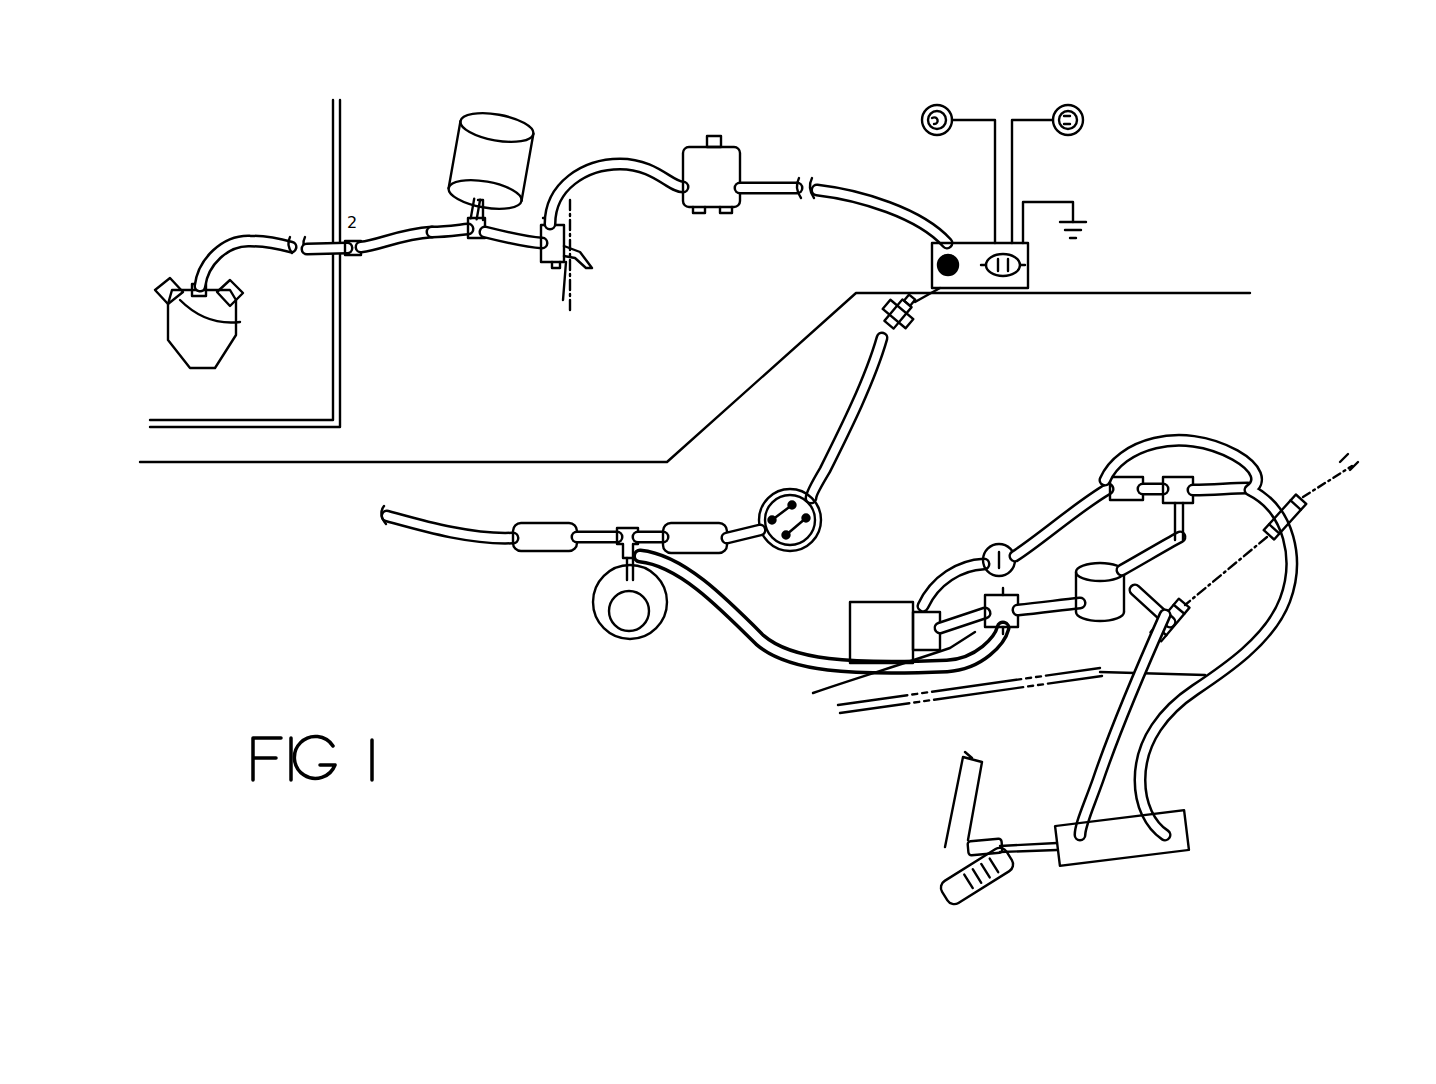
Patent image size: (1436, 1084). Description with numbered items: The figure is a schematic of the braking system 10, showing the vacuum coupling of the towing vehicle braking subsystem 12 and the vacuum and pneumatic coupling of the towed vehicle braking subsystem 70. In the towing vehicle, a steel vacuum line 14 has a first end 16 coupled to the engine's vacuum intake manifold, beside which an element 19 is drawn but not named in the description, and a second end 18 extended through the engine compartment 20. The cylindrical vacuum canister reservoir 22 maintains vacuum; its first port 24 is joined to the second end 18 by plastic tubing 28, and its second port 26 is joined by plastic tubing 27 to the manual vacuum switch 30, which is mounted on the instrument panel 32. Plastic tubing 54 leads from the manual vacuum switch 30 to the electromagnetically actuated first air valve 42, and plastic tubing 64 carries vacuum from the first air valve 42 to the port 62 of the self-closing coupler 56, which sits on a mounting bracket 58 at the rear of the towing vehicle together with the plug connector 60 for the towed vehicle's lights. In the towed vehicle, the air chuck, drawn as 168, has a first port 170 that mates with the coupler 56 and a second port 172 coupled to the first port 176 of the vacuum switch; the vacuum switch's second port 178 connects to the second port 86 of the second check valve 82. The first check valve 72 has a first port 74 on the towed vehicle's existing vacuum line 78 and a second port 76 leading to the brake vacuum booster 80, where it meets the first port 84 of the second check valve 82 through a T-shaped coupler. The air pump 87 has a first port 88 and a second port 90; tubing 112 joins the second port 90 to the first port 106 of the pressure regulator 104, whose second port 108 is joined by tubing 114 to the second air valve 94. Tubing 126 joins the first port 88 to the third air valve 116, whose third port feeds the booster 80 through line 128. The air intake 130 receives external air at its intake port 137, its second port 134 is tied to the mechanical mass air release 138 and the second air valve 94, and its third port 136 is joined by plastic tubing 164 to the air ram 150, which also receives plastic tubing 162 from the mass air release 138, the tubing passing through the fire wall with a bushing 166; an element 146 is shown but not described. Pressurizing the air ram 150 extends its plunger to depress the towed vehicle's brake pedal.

The braking system 10 is at (133, 182).
The towing vehicle braking subsystem 12 is at (176, 156).
The vacuum line 14 is at (256, 244).
The first end 16 is at (198, 282).
The second end 18 is at (365, 258).
The handpiece 19 is at (240, 322).
The engine compartment 20 is at (340, 350).
The vacuum canister reservoir 22 is at (480, 122).
The first port 24 is at (442, 260).
The second port 26 is at (490, 250).
The plastic tubing 27 is at (518, 240).
The plastic tubing 28 is at (400, 260).
The manual vacuum switch 30 is at (588, 268).
The instrument panel 32 is at (578, 230).
The first air valve 42 is at (745, 150).
The plastic tubing 54 is at (612, 158).
The coupler 56 is at (930, 262).
The mounting bracket 58 is at (1030, 252).
The plug connector 60 is at (1028, 275).
The port 62 is at (950, 243).
The plastic tubing 64 is at (858, 185).
The towed vehicle braking subsystem 70 is at (288, 543).
The first check valve 72 is at (533, 540).
The first port 74 is at (500, 530).
The second port 76 is at (580, 548).
The existing vacuum line 78 is at (426, 527).
The brake vacuum booster 80 is at (622, 612).
The second check valve 82 is at (705, 555).
The first port 84 is at (662, 530).
The second port 86 is at (735, 530).
The air pump 87 is at (868, 630).
The first port 88 is at (881, 679).
The second port 90 is at (926, 600).
The second air valve 94 is at (1115, 478).
The pressure regulator 104 is at (992, 545).
The first port 106 is at (976, 556).
The second port 108 is at (994, 544).
The tubing 112 is at (950, 550).
The tubing 114 is at (1045, 528).
The third air valve 116 is at (1014, 630).
The tubing 126 is at (913, 695).
The line 128 is at (748, 652).
The air intake 130 is at (1100, 608).
The second port 134 is at (1132, 560).
The third port 136 is at (1200, 620).
The intake port 137 is at (1060, 674).
The mechanical mass air release 138 is at (1180, 478).
The cable 146 is at (1205, 578).
The air ram 150 is at (1135, 846).
The plastic tubing 162 is at (1265, 620).
The plastic tubing 164 is at (1205, 675).
The bushing 166 is at (1300, 520).
The quick connector 168 is at (917, 320).
The first port 170 is at (917, 307).
The second port 172 is at (895, 340).
The first port 176 is at (806, 488).
The second port 178 is at (784, 552).